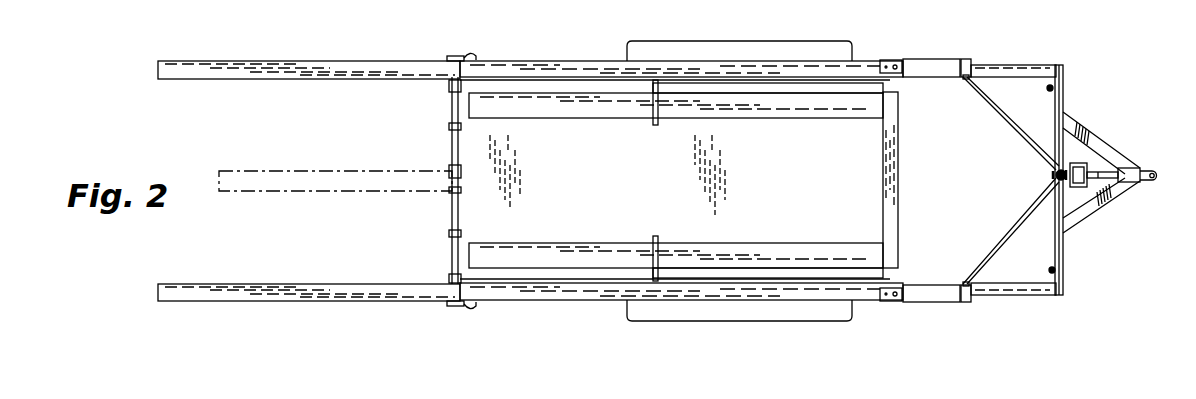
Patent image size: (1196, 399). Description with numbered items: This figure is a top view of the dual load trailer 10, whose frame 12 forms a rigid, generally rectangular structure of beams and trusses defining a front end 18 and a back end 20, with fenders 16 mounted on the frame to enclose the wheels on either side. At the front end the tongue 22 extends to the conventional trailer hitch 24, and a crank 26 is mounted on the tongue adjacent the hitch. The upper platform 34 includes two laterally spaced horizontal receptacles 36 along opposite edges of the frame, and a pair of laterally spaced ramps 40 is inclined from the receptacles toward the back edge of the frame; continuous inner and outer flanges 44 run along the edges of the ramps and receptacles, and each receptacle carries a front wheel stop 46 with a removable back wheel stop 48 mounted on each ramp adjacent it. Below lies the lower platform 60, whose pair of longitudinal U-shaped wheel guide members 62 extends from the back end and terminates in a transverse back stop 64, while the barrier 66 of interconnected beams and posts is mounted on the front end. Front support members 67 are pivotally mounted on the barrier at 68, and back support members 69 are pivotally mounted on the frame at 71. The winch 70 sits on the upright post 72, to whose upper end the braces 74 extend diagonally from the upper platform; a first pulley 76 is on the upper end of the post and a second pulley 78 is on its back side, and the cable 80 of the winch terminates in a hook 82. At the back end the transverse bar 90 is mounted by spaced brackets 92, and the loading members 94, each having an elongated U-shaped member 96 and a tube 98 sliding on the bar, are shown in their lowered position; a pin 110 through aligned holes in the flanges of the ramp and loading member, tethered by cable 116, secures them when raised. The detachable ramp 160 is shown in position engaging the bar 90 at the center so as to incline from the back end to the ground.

The dual load trailer 10 is at (573, 312).
The frame 12 is at (930, 305).
The fenders 16 is at (795, 47).
The front end 18 is at (1025, 300).
The back end 20 is at (417, 228).
The tongue 22 is at (1091, 132).
The trailer hitch 24 is at (1153, 180).
The crank 26 is at (1122, 172).
The upper platform 34 is at (923, 55).
The horizontal receptacles 36 is at (942, 59).
The ramps 40 is at (608, 60).
The inner and outer flanges 44 is at (557, 60).
The front wheel stop 46 is at (972, 62).
The back wheel stop 48 is at (893, 58).
The lower platform 60 is at (695, 227).
The longitudinal wheel guide members 62 is at (637, 112).
The transverse back stop 64 is at (885, 182).
The barrier 66 is at (1023, 70).
The front support members 67 is at (1002, 84).
The pivot mounting of front support members 68 is at (1053, 88).
The back support members 69 is at (781, 82).
The winch 70 is at (1092, 158).
The pivot mounting of back support members 71 is at (657, 112).
The upright post 72 is at (1062, 157).
The braces 74 is at (1008, 110).
The first pulley 76 is at (1068, 186).
The second pulley 78 is at (1050, 172).
The cable 80 is at (1058, 182).
The hook 82 is at (1047, 180).
The transverse bar 90 is at (450, 104).
The brackets 92 is at (458, 56).
The loading members 94 is at (347, 58).
The elongated U-shaped member 96 is at (336, 300).
The tube 98 is at (450, 278).
The pin 110 is at (468, 55).
The cable 116 is at (470, 58).
The detachable ramp 160 is at (327, 168).